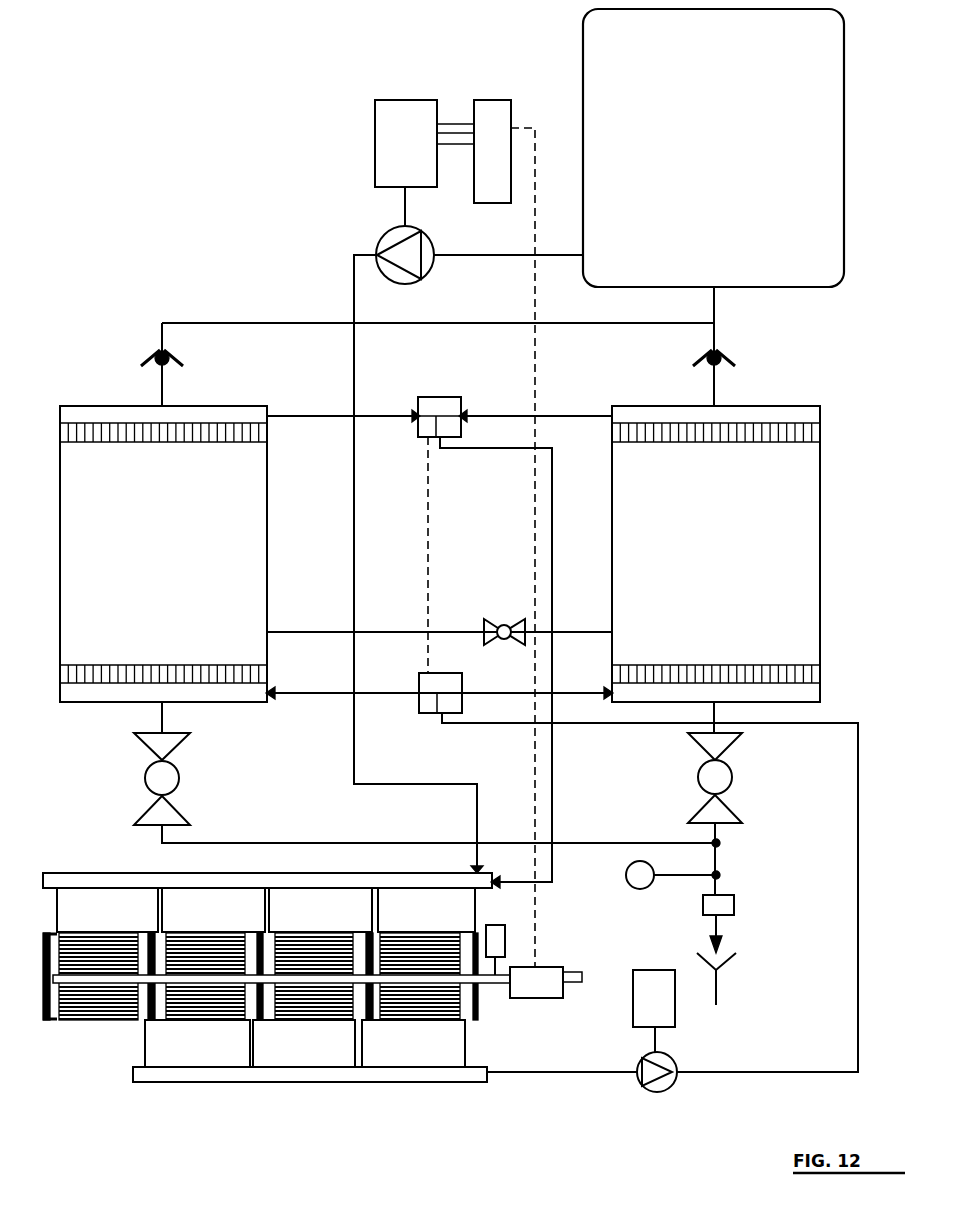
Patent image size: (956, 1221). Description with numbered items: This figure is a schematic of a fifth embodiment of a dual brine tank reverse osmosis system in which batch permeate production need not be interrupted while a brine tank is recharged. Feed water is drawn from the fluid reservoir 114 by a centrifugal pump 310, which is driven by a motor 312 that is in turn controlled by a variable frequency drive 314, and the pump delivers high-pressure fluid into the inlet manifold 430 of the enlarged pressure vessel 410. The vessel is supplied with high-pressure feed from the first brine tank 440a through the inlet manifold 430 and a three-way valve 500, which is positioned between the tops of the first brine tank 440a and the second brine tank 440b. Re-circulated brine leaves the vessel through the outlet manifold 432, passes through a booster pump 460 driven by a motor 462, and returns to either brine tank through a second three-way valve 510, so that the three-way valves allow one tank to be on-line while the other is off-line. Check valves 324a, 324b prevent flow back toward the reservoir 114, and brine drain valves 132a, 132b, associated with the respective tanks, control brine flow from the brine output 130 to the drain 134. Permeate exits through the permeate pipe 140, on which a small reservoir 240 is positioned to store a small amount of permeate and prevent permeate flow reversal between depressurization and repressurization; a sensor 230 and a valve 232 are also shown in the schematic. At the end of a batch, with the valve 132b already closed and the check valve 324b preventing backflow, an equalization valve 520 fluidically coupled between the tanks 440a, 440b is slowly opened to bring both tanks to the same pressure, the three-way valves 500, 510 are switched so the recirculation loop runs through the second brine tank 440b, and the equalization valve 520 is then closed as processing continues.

The three-way valve 500 is at (418, 404).
The fluid reservoir 114 is at (583, 46).
The motor 312 is at (375, 115).
The variable frequency drive 314 is at (511, 116).
The centrifugal pump 310 is at (430, 275).
The check valve 324b is at (175, 352).
The check valve 324a is at (728, 352).
The second brine tank 440b is at (267, 518).
The first brine tank 440a is at (820, 545).
The equalization valve 520 is at (505, 618).
The second three-way valve 510 is at (419, 680).
The brine output 130 is at (716, 712).
The brine drain valve 132a is at (732, 765).
The brine drain valve 132b is at (178, 764).
The sensor 230 is at (631, 888).
The valve 232 is at (735, 912).
The drain 134 is at (726, 965).
The inlet manifold 430 is at (46, 880).
The pressure vessel 410 is at (237, 933).
The small reservoir 240 is at (488, 925).
The permeate pipe 140 is at (565, 972).
The outlet manifold 432 is at (160, 1072).
The motor 462 is at (676, 1010).
The booster pump 460 is at (645, 1088).